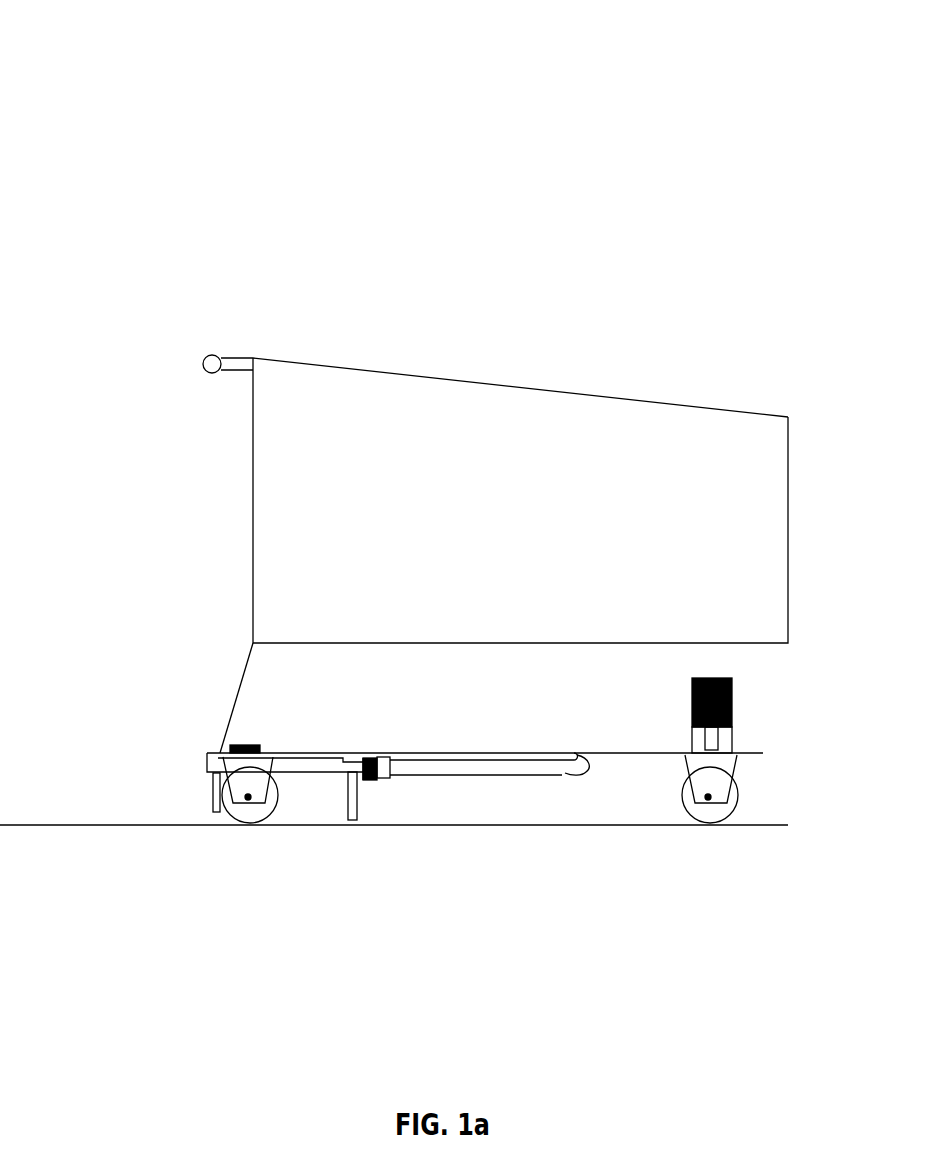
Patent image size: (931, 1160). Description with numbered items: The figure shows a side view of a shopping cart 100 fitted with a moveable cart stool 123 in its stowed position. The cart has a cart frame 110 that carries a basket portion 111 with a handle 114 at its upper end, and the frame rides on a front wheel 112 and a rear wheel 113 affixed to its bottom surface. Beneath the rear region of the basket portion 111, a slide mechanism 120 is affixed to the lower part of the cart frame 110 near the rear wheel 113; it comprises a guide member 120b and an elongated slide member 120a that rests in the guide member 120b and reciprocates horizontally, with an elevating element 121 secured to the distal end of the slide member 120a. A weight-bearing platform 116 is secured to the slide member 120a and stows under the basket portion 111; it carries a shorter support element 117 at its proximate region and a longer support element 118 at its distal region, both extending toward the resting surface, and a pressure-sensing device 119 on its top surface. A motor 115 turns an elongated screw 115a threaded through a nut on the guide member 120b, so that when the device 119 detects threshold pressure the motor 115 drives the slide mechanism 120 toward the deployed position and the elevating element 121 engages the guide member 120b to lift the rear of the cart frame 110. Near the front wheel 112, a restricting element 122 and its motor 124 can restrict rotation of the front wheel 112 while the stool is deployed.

The shopping cart 100 is at (92, 117).
The cart frame 110 is at (146, 352).
The basket portion 111 is at (525, 387).
The front wheel 112 is at (690, 812).
The rear wheel 113 is at (232, 823).
The handle 114 is at (205, 357).
The motor 115 is at (372, 782).
The elongated screw 115a is at (418, 773).
The weight-bearing platform 116 is at (208, 756).
The support element 117 is at (212, 803).
The support element 118 is at (349, 808).
The device 119 is at (246, 745).
The slide mechanism 120 is at (343, 708).
The elongated slide member 120a is at (488, 753).
The guide member 120b is at (380, 772).
The elevating element 121 is at (576, 770).
The restricting element 122 is at (730, 738).
The moveable cart stool 123 is at (203, 928).
The motor 124 is at (710, 678).